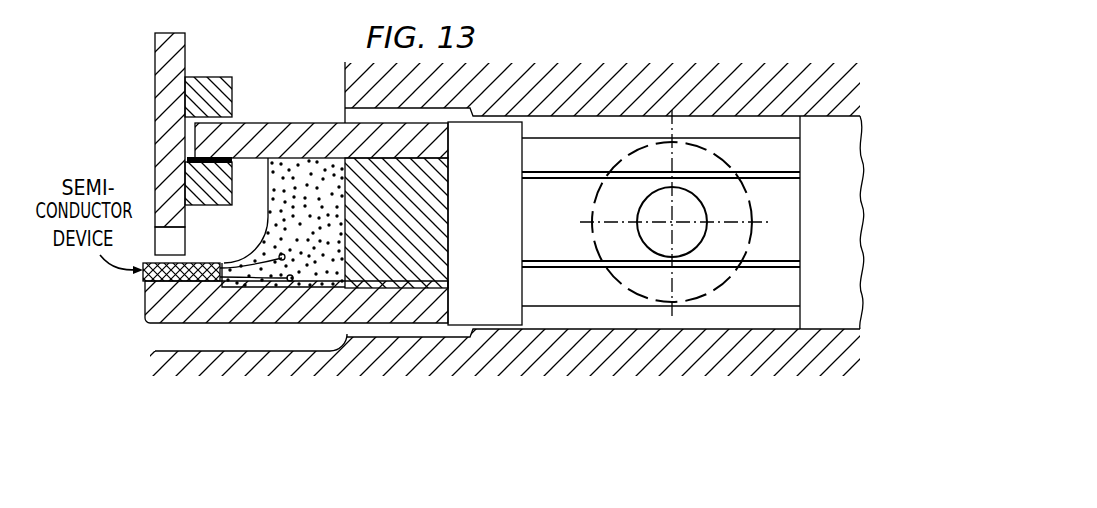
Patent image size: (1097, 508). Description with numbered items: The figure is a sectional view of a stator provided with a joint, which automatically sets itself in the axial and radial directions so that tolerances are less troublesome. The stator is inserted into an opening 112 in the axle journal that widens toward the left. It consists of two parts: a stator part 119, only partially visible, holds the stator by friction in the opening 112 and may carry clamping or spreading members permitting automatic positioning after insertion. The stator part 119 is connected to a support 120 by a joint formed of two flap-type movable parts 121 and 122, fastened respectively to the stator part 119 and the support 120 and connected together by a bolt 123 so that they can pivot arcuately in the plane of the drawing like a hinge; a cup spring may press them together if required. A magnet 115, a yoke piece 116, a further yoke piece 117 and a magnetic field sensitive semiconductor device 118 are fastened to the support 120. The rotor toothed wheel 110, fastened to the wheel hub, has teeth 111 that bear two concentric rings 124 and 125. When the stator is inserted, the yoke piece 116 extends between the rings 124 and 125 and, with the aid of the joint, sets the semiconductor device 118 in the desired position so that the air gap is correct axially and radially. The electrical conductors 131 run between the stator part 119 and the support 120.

The rotor toothed wheel 110 is at (170, 52).
The teeth 111 is at (170, 247).
The opening 112 is at (585, 322).
The magnet 115 is at (368, 272).
The yoke piece 116 is at (267, 128).
The yoke piece 117 is at (303, 310).
The magnetic field sensitive semiconductor device 118 is at (190, 270).
The stator part 119 is at (825, 313).
The support 120 is at (458, 303).
The movable part 121 is at (737, 293).
The movable part 122 is at (547, 295).
The bolt 123 is at (660, 240).
The ring 124 is at (212, 88).
The ring 125 is at (217, 197).
The electrical conductors 131 is at (570, 178).